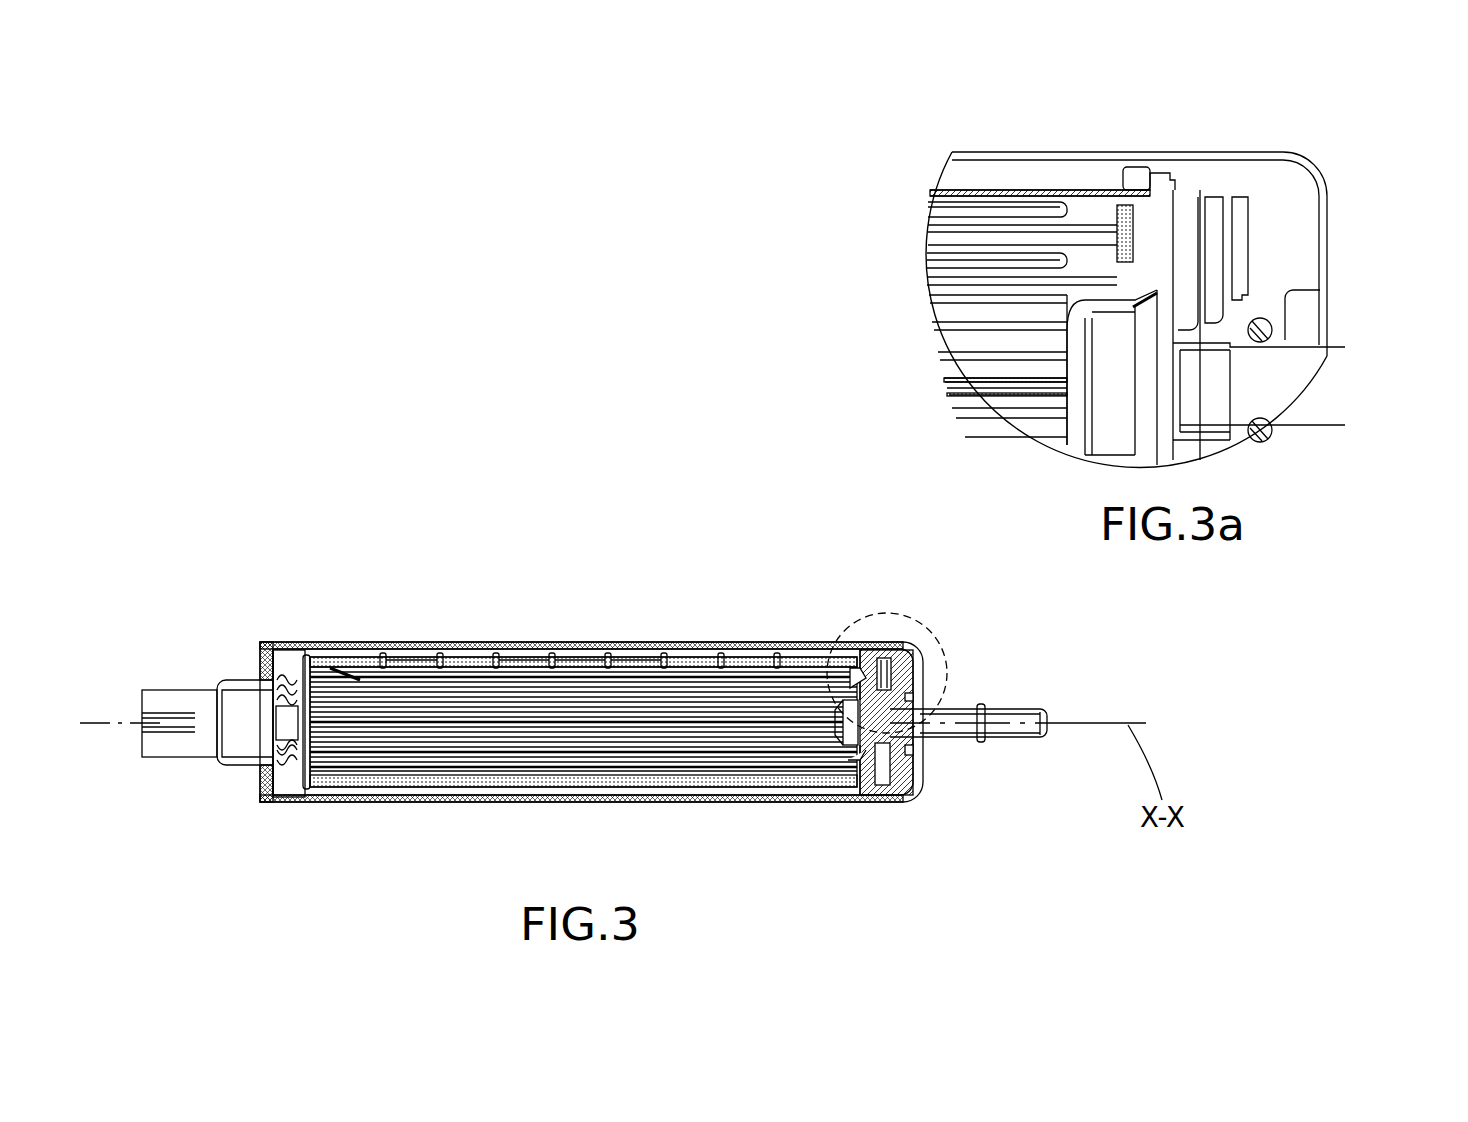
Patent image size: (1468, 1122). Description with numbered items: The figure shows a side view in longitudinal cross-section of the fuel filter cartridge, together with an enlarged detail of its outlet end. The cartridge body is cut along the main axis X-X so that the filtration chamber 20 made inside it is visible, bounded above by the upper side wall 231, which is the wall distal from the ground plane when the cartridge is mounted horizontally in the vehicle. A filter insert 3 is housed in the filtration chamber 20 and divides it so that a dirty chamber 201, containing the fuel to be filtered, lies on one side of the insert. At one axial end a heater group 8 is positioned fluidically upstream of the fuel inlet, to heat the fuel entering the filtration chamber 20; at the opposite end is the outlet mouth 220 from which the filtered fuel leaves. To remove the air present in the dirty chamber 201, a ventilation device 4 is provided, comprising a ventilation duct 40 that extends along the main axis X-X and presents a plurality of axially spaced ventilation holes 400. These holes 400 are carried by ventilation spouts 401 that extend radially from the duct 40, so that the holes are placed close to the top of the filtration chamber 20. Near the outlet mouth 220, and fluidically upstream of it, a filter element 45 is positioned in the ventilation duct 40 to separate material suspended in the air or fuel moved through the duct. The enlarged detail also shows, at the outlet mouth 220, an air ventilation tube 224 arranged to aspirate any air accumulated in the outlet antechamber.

In FIG. 3, the filter insert 3 is at (635, 775).
In FIG. 3, the ventilation device 4 is at (777, 643).
In FIG. 3, the heater group 8 is at (180, 775).
In FIG. 3, the filtration chamber 20 is at (290, 788).
In FIG. 3, the ventilation duct 40 is at (345, 672).
In FIG. 3A, the ventilation duct 40 is at (970, 232).
In FIG. 3, the filter element 45 is at (830, 660).
In FIG. 3A, the filter element 45 is at (1124, 215).
In FIG. 3, the dirty chamber 201 is at (285, 657).
In FIG. 3A, the dirty chamber 201 is at (1018, 173).
In FIG. 3A, the outlet mouth 220 is at (1210, 383).
In FIG. 3A, the air ventilation tube 224 is at (1228, 250).
In FIG. 3, the upper side wall 231 is at (297, 642).
In FIG. 3A, the upper side wall 231 is at (957, 155).
In FIG. 3, the ventilation holes 400 is at (383, 648).
In FIG. 3, the ventilation spouts 401 is at (543, 655).